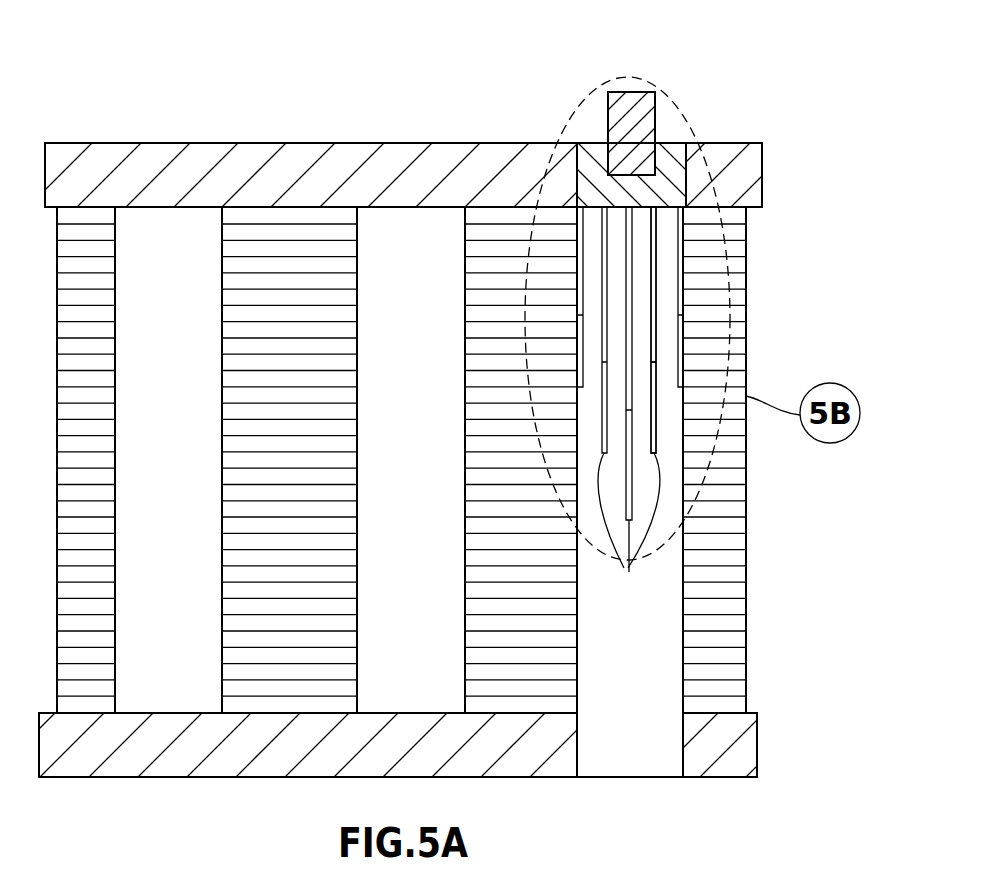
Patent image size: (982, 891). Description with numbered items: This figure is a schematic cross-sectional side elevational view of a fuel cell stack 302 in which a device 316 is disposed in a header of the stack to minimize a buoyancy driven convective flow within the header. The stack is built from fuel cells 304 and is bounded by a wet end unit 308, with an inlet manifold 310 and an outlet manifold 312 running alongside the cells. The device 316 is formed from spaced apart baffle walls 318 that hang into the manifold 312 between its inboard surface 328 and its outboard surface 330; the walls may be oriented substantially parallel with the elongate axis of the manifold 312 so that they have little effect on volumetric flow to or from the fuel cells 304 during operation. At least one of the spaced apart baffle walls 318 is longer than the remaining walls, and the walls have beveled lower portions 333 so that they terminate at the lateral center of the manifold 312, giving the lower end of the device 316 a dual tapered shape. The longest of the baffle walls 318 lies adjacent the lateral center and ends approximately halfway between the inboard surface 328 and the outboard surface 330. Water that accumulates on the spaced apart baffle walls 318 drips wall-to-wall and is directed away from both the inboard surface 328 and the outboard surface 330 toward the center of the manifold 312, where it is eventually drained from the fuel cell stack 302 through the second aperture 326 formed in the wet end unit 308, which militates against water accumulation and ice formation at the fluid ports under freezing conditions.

The fuel cell stack 302 is at (92, 107).
The fuel cells 304 is at (222, 478).
The wet end unit 308 is at (503, 778).
The inlet manifold 310 is at (187, 641).
The manifold 312 is at (649, 647).
The device 316 is at (548, 85).
The spaced apart baffle walls 318 is at (630, 400).
The second aperture 326 is at (683, 750).
The inboard surface 328 is at (588, 687).
The outboard surface 330 is at (676, 579).
The beveled lower portions 333 is at (657, 378).